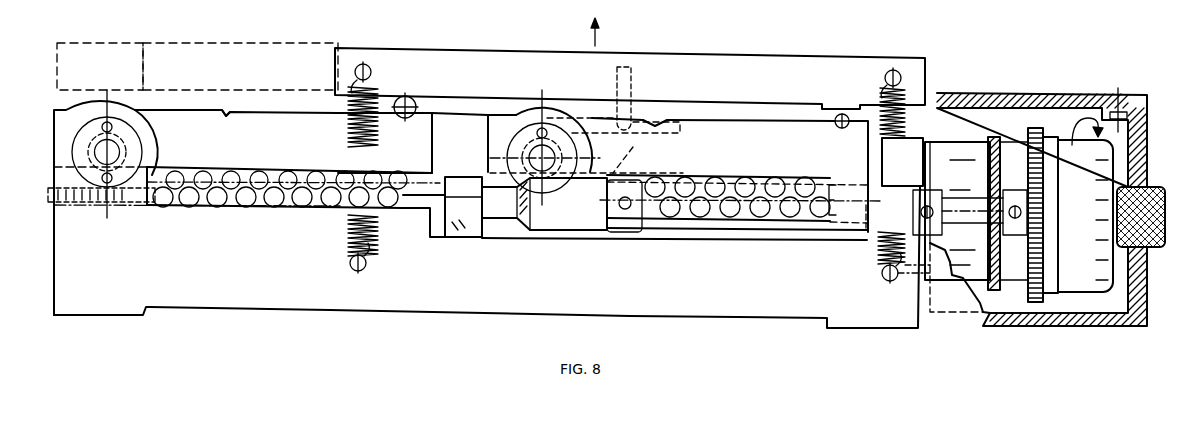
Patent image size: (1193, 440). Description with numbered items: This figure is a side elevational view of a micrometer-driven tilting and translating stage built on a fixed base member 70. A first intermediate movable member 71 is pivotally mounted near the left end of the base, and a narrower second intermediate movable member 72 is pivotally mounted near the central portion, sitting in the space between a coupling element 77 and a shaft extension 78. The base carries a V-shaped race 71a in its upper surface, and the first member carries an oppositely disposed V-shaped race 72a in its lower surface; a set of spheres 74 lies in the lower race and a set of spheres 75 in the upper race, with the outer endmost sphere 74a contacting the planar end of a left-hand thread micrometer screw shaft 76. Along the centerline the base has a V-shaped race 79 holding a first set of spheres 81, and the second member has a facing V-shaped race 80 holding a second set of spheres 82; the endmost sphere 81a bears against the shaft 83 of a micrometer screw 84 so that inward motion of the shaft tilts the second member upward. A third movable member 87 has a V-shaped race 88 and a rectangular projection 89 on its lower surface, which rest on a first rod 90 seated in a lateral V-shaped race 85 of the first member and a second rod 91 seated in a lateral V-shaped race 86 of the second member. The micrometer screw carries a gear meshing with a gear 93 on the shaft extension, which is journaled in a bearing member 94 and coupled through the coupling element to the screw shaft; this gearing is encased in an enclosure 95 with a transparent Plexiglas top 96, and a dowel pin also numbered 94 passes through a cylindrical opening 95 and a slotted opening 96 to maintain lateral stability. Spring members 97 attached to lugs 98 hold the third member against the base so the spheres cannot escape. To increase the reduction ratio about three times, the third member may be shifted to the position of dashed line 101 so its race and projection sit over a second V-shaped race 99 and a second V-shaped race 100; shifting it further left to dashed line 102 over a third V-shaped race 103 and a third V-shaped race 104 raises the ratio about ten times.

The fixed base member 70 is at (613, 283).
The first intermediate movable member 71 is at (261, 148).
The V-shaped race 71a is at (279, 210).
The second intermediate movable member 72 is at (703, 155).
The V-shaped race 72a is at (323, 171).
The set of spheres 74 is at (248, 210).
The outer endmost sphere 74a is at (392, 212).
The set of spheres 75 is at (233, 168).
The micrometer screw shaft 76 is at (432, 197).
The coupling element 77 is at (572, 233).
The shaft extension 78 is at (733, 212).
The V-shaped race 79 is at (790, 222).
The V-shaped race 80 is at (789, 180).
The first set of spheres 81 is at (763, 211).
The outer endmost sphere 81a is at (815, 189).
The second set of spheres 82 is at (652, 182).
The shaft 83 is at (598, 38).
The micrometer screw 84 is at (1125, 164).
The V-shaped race 85 is at (404, 120).
The V-shaped race 86 is at (843, 129).
The third movable member 87 is at (708, 88).
The V-shaped race 88 is at (411, 99).
The rectangular projection 89 is at (817, 82).
The first rod 90 is at (420, 107).
The second rod 91 is at (834, 119).
The gear 93 is at (1029, 128).
The bearing member / dowel pin 94 is at (626, 111).
The enclosure / cylindrical opening 95 is at (633, 77).
The transparent top / slotted opening 96 is at (638, 132).
The spring members 97 is at (334, 80).
The lugs 98 is at (372, 68).
The second V-shaped race 99 is at (227, 113).
The second V-shaped race 100 is at (664, 120).
The dashed line 101 is at (147, 49).
The dashed line 102 is at (78, 43).
The third V-shaped race 103 is at (142, 112).
The third V-shaped race 104 is at (576, 124).